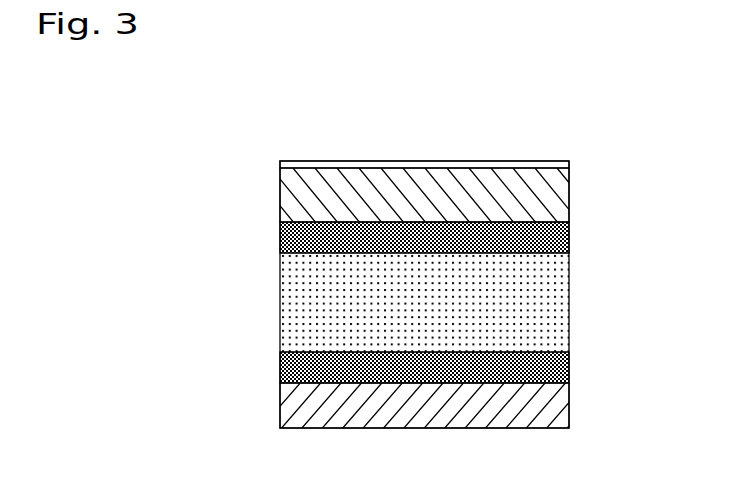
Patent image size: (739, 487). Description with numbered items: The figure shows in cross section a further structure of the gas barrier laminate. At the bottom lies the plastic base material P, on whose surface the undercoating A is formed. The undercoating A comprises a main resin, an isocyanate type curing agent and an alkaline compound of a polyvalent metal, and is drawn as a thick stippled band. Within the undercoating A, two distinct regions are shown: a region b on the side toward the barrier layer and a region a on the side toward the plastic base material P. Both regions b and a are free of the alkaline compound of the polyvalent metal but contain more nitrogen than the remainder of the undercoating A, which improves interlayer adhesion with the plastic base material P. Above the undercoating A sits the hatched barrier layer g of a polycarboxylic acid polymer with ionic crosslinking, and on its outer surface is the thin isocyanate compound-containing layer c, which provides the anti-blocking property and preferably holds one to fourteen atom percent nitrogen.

The isocyanate compound-containing layer c is at (569, 163).
The gas barrier layer g is at (569, 193).
The region free of the alkaline compound of the polyvalent metal b is at (569, 237).
The undercoating A is at (643, 225).
The region in the undercoating on the side of the plastic base material a is at (569, 366).
The plastic base material P is at (569, 400).